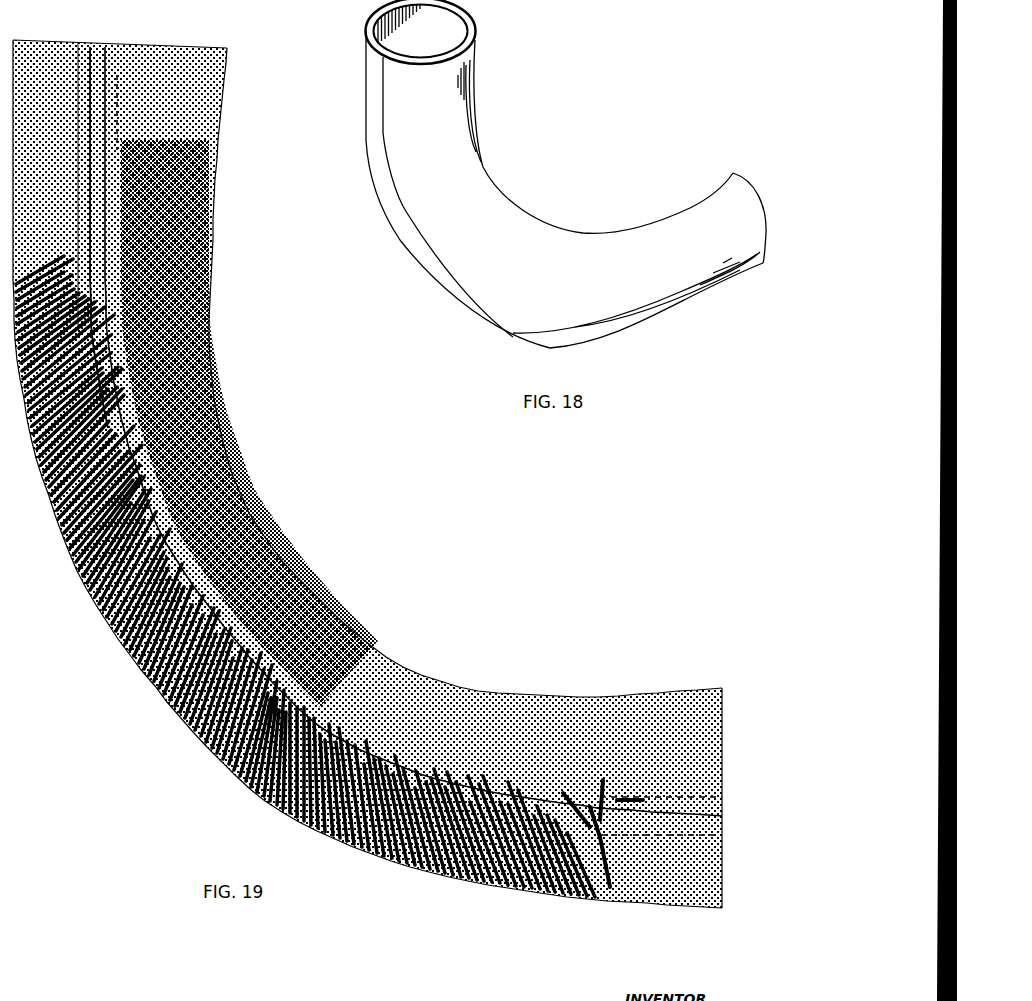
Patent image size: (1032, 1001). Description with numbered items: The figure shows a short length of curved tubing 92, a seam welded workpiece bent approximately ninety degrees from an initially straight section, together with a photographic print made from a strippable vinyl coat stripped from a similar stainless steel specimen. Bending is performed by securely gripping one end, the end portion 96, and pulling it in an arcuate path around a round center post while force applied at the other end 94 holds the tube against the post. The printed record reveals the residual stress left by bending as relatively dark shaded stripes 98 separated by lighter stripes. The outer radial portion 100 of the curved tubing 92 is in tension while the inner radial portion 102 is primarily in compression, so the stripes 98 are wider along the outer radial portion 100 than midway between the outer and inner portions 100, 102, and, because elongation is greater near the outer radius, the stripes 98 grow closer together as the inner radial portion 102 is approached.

In FIG. 18, the curved tubing 92 is at (383, 193).
In FIG. 18, the end 94 is at (450, 73).
In FIG. 19, the end 94 is at (200, 107).
In FIG. 18, the end portion 96 is at (730, 203).
In FIG. 19, the end portion 96 is at (683, 707).
In FIG. 19, the shaded stripes 98 is at (228, 760).
In FIG. 18, the outer radial portion 100 is at (410, 267).
In FIG. 19, the outer radial portion 100 is at (125, 648).
In FIG. 18, the inner radial portion 102 is at (615, 235).
In FIG. 19, the inner radial portion 102 is at (290, 578).